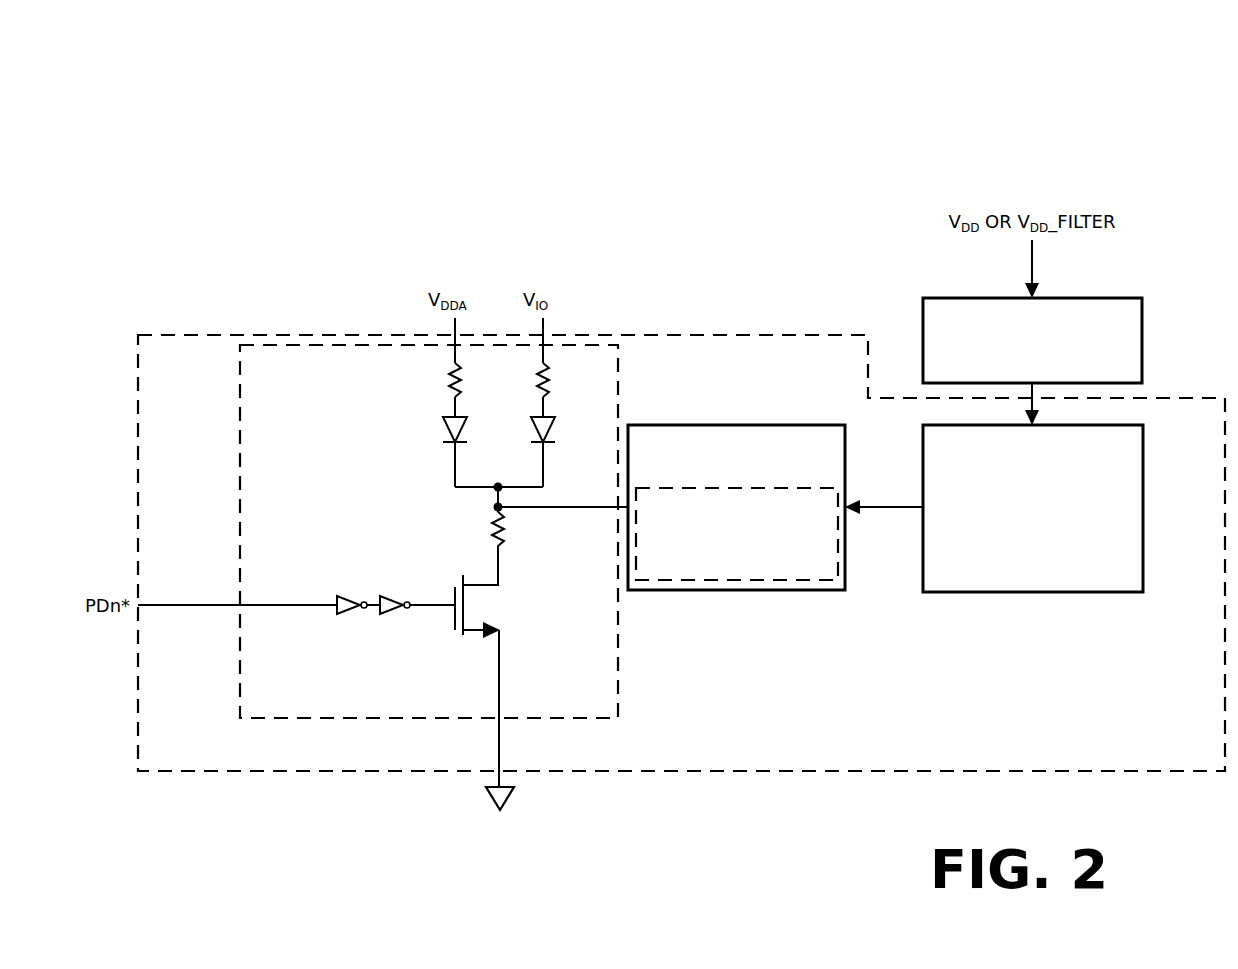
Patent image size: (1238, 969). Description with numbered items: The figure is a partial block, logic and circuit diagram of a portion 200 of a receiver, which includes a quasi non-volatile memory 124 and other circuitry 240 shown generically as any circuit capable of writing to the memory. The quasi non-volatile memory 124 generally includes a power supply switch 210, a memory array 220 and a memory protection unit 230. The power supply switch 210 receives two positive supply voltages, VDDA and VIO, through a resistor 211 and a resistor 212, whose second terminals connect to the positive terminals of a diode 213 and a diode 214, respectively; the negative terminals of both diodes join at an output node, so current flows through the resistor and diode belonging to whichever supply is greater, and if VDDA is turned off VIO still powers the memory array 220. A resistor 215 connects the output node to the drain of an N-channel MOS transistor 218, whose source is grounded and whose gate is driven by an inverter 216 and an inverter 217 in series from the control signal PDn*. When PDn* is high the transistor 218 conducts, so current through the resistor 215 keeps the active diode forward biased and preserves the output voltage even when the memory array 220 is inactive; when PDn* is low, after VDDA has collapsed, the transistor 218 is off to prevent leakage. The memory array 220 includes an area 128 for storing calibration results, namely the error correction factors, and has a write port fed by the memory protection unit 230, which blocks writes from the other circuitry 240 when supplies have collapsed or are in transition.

The portion 200 is at (232, 118).
The quasi non-volatile memory 124 is at (305, 333).
The power supply switch 210 is at (240, 446).
The resistor 211 is at (452, 368).
The resistor 212 is at (546, 374).
The diode 213 is at (442, 410).
The diode 214 is at (548, 432).
The resistor 215 is at (490, 530).
The inverter 216 is at (345, 612).
The inverter 217 is at (397, 613).
The N-channel MOS transistor 218 is at (464, 634).
The memory array 220 is at (740, 424).
The area for storing calibration results 128 is at (700, 582).
The memory protection unit 230 is at (1034, 593).
The other circuitry 240 is at (1145, 345).